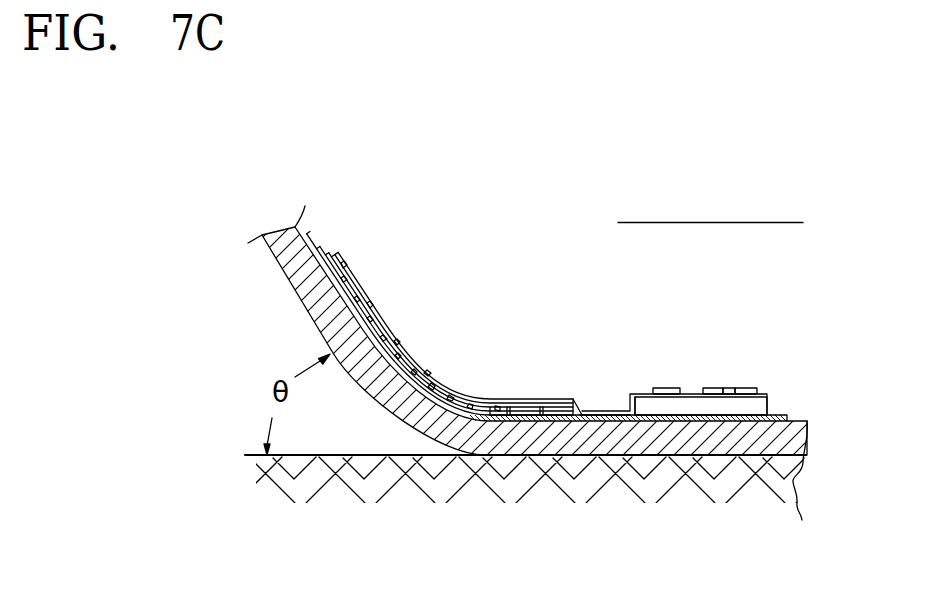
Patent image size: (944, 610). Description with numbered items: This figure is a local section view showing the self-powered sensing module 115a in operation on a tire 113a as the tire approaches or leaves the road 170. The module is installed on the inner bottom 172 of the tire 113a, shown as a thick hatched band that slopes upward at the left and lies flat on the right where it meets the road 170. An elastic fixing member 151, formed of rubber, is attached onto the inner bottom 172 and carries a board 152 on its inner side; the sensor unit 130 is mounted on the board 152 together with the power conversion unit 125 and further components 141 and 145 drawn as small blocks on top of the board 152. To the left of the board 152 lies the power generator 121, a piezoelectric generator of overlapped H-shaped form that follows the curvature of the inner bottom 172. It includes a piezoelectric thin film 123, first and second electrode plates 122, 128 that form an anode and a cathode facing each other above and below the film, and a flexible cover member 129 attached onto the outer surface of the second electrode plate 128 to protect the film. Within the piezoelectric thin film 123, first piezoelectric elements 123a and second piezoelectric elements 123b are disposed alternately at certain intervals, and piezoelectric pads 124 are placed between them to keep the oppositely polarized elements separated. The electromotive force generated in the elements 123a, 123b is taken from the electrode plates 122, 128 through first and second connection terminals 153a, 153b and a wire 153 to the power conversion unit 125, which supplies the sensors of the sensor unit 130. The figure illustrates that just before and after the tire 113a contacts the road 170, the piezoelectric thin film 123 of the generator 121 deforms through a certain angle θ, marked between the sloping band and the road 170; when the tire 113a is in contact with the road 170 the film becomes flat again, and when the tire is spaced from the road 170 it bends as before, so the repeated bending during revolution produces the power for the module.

The tire 113a is at (312, 288).
The self-powered sensing module 115a is at (710, 209).
The power generator 121 is at (466, 380).
The first electrode plate 122 is at (530, 399).
The piezoelectric thin film 123 is at (331, 247).
The first piezoelectric element 123a is at (332, 262).
The second piezoelectric element 123b is at (357, 291).
The piezoelectric pad 124 is at (412, 342).
The power conversion unit 125 is at (666, 388).
The second electrode plate 128 is at (490, 399).
The flexible cover member 129 is at (441, 383).
The sensor unit 130 is at (727, 388).
The first element 141 is at (713, 388).
The second element 145 is at (749, 388).
The elastic fixing member 151 is at (787, 414).
The board 152 is at (765, 398).
The wire 153 is at (608, 411).
The first connection terminal 153a is at (577, 421).
The second connection terminal 153b is at (580, 410).
The road 170 is at (683, 494).
The inner bottom 172 is at (805, 420).